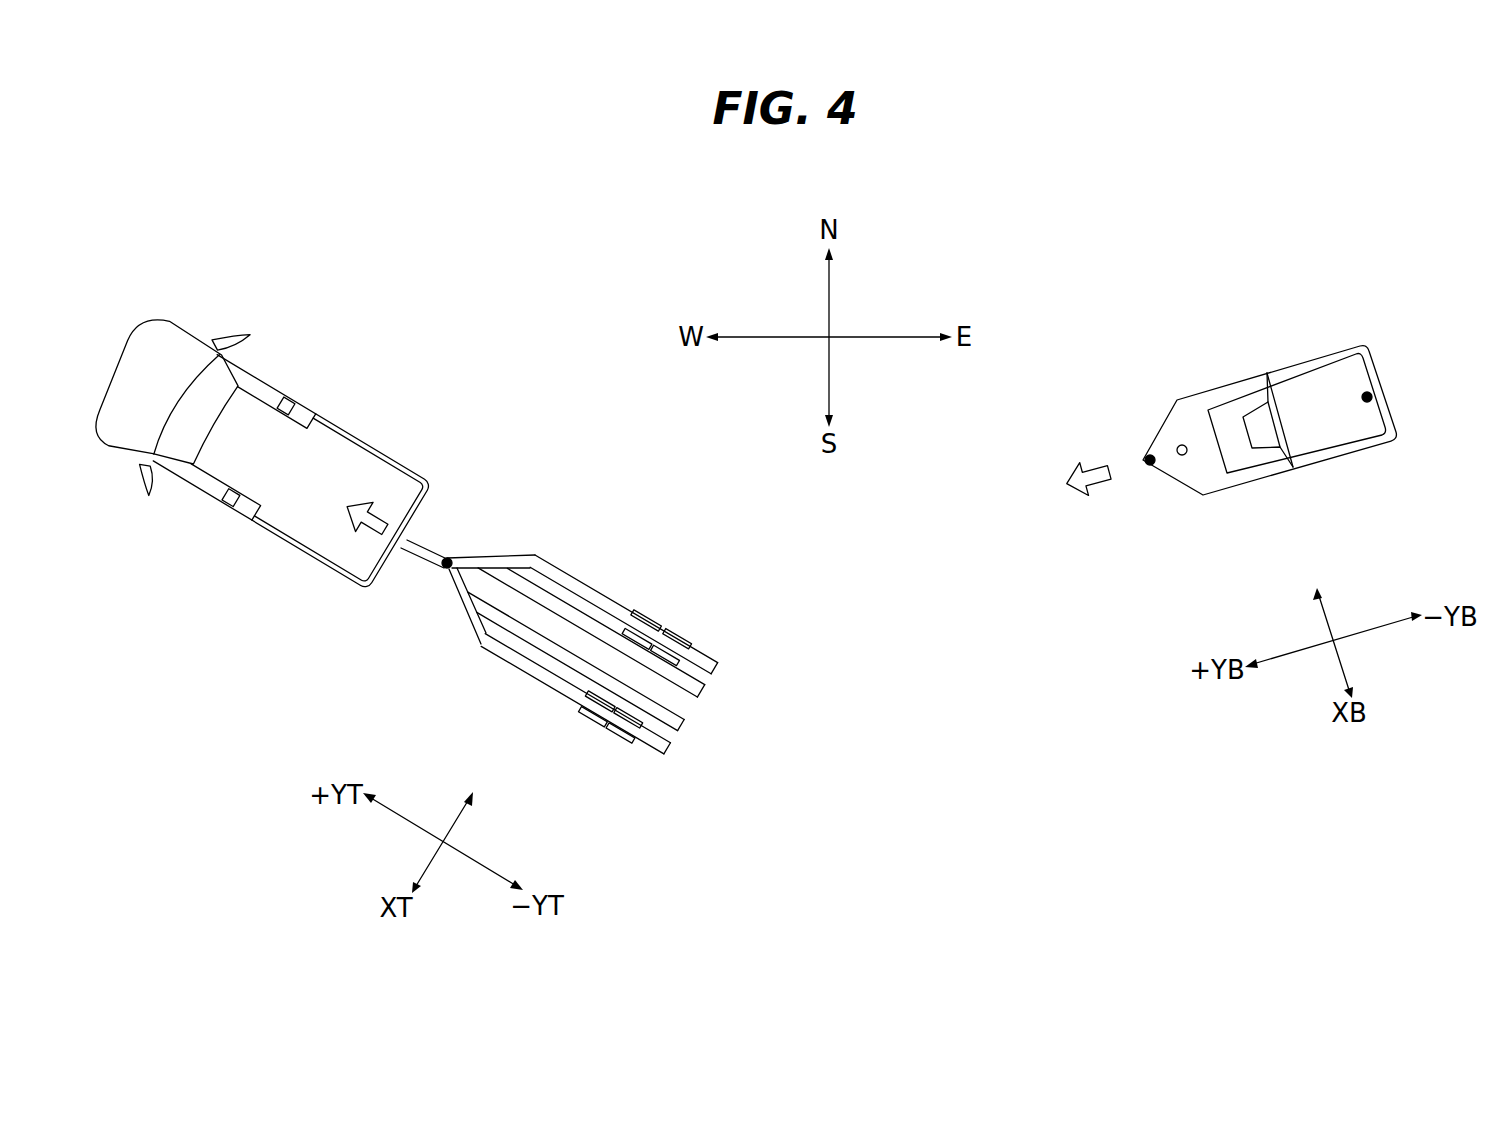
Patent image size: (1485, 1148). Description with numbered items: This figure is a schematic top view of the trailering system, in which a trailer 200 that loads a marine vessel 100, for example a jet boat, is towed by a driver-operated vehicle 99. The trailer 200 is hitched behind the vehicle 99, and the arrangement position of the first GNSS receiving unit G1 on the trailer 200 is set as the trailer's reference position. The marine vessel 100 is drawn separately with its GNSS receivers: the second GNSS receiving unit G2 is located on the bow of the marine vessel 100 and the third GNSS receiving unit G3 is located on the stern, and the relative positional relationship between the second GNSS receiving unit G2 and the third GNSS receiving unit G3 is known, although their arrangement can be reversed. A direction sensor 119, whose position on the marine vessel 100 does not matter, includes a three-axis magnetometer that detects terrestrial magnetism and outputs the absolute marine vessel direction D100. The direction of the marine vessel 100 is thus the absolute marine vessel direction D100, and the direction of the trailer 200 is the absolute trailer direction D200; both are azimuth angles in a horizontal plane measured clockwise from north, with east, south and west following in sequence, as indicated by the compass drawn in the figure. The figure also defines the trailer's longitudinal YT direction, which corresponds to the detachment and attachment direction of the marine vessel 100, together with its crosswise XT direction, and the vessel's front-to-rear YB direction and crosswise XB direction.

The vehicle 99 is at (306, 396).
The marine vessel 100 is at (1274, 356).
The direction sensor 119 is at (1185, 456).
The trailer 200 is at (561, 706).
The first GNSS receiving unit G1 is at (446, 570).
The second GNSS receiving unit G2 is at (1152, 466).
The third GNSS receiving unit G3 is at (1366, 403).
The absolute marine vessel direction D100 is at (1050, 486).
The absolute trailer direction D200 is at (337, 510).